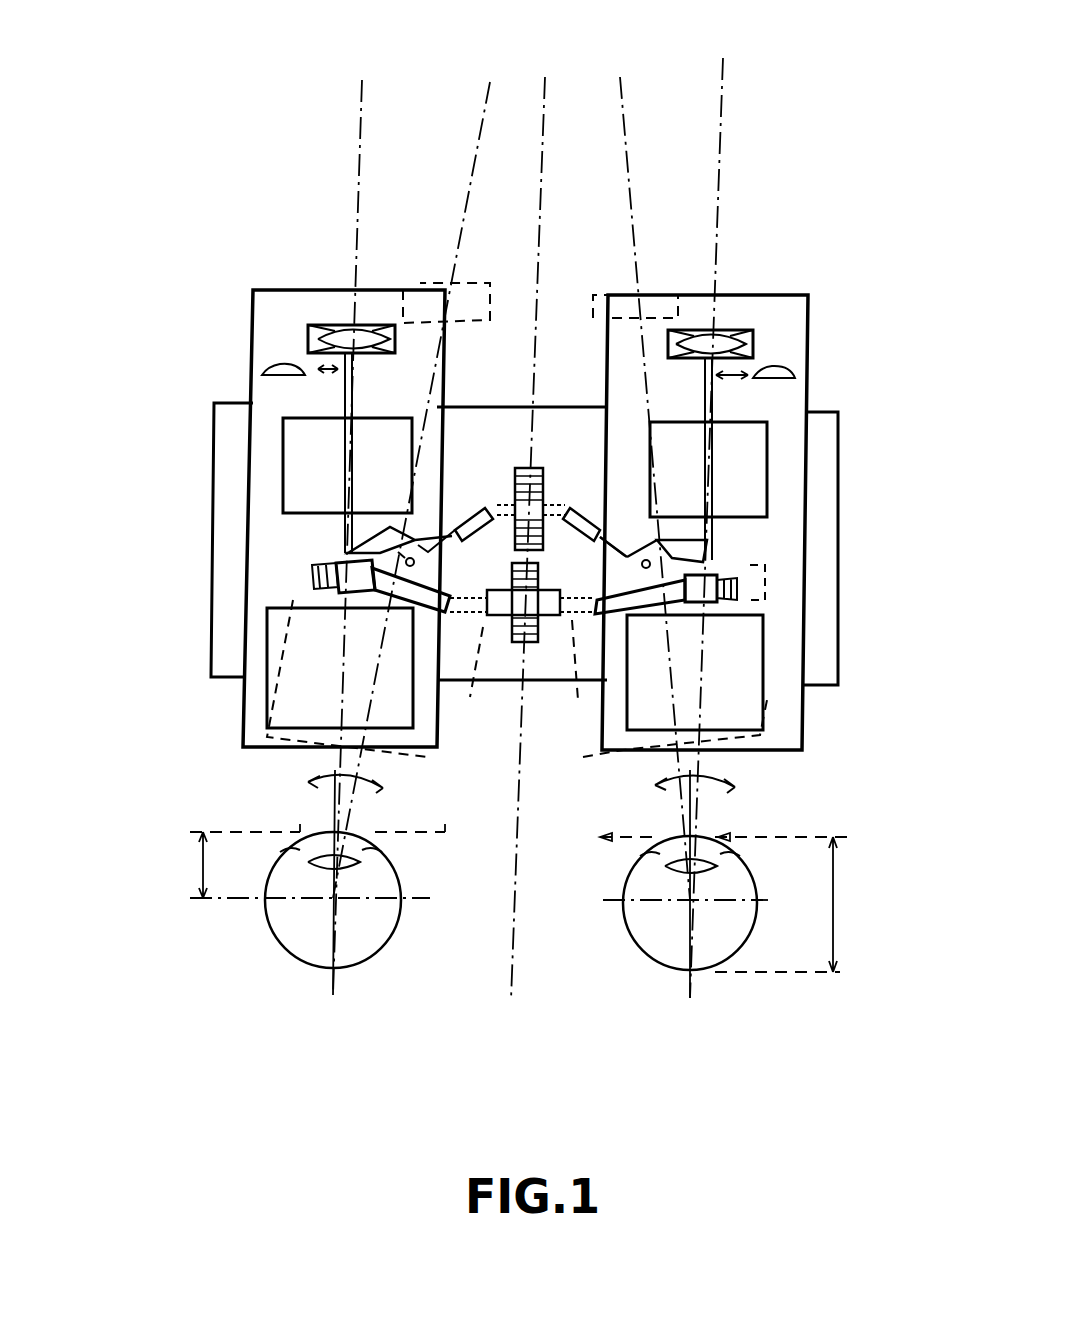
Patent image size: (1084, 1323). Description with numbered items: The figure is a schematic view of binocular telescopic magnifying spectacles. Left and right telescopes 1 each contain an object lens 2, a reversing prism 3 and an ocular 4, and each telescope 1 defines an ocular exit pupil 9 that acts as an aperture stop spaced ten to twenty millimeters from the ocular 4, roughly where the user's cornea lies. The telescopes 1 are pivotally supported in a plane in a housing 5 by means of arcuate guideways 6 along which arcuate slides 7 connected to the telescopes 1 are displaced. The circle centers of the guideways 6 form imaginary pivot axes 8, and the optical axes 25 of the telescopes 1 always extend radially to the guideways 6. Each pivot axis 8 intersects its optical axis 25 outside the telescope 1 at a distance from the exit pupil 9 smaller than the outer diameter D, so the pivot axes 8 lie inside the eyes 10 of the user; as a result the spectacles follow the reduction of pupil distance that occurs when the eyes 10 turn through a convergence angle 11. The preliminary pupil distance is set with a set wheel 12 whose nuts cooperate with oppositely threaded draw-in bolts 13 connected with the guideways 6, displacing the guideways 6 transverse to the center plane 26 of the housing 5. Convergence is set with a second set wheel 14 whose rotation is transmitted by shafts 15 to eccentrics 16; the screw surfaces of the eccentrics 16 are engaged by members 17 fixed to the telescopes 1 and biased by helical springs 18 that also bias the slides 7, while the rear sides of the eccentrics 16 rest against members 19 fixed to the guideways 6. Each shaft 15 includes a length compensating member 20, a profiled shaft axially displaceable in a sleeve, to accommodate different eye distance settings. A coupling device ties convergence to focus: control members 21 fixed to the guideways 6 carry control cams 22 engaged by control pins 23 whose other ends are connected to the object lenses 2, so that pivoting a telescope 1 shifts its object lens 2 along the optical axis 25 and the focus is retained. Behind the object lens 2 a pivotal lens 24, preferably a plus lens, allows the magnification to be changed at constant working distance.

The telescope 1 is at (265, 305).
The object lens 2 is at (320, 338).
The reversing prism 3 is at (300, 435).
The ocular 4 is at (302, 698).
The housing 5 is at (814, 571).
The arcuate guideway 6 is at (425, 587).
The arcuate slide 7 is at (372, 576).
The imaginary pivot axis 8 is at (333, 900).
The ocular exit pupil 9 is at (607, 838).
The eye 10 is at (317, 945).
The convergence angle 11 is at (337, 798).
The set wheel 12 is at (518, 617).
The draw-in bolt 13 is at (575, 613).
The set wheel 14 is at (535, 487).
The shaft 15 is at (632, 540).
The eccentric 16 is at (598, 618).
The member 17 is at (648, 558).
The helical spring 18 is at (737, 592).
The member 19 is at (652, 540).
The length compensating member 20 is at (590, 527).
The control member 21 is at (405, 538).
The control cam 22 is at (360, 548).
The control pin 23 is at (343, 468).
The pivotal lens 24 is at (283, 367).
The optical axis 25 is at (360, 108).
The center plane 26 is at (543, 132).